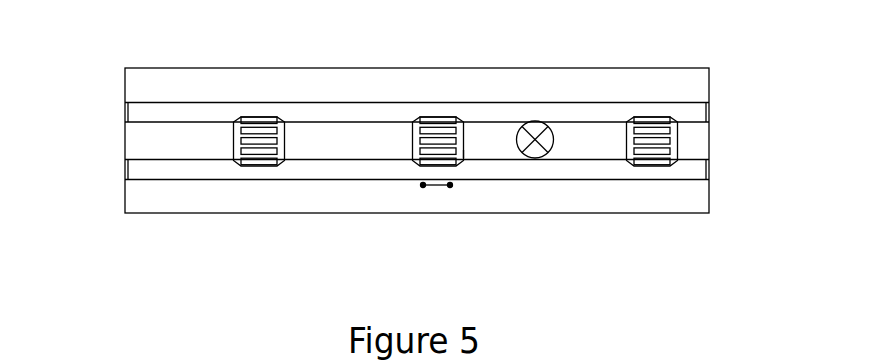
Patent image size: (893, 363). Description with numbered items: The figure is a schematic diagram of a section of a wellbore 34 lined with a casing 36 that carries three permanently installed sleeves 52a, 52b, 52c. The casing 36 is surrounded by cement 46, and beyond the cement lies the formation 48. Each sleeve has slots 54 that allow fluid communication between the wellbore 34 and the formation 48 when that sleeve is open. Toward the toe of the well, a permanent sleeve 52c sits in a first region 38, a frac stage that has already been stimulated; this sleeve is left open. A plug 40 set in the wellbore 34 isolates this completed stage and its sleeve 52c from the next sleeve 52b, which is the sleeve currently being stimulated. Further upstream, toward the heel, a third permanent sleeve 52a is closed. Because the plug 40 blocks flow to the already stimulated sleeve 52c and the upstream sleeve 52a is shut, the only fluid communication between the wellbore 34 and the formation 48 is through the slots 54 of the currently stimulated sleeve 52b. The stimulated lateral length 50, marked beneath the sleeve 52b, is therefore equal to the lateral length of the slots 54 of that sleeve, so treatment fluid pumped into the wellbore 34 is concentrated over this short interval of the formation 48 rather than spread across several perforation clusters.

The wellbore 34 is at (109, 165).
The casing 36 is at (182, 122).
The first region 38 is at (603, 120).
The plug 40 is at (547, 153).
The cement 46 is at (315, 167).
The formation 48 is at (390, 90).
The stimulated lateral length 50 is at (437, 187).
The third permanent sleeve 52a is at (282, 119).
The sleeve 52b is at (460, 120).
The permanent sleeve 52c is at (673, 121).
The slots 54 is at (463, 154).